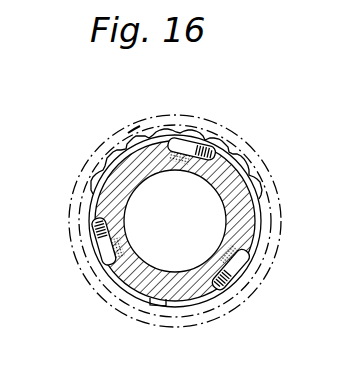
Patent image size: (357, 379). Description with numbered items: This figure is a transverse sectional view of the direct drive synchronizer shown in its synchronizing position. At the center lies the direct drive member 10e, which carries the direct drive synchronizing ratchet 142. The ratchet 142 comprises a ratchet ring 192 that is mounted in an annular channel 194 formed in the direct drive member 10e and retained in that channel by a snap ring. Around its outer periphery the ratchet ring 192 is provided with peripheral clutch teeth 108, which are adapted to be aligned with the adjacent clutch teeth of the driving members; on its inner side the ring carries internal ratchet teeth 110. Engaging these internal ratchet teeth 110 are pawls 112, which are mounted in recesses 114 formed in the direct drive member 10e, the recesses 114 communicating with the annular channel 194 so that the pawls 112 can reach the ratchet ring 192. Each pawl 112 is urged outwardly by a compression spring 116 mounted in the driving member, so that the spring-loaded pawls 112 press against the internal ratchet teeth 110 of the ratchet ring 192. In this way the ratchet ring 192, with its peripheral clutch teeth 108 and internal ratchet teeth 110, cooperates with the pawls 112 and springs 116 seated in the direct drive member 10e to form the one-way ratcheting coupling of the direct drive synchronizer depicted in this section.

The direct drive member 10e is at (112, 196).
The internal ratchet teeth 110 is at (138, 143).
The peripheral clutch teeth 108 is at (200, 125).
The ratchet ring 192 is at (132, 124).
The direct drive synchronizing ratchet 142 is at (176, 130).
The compression spring 116 is at (178, 150).
The pawl 112 is at (94, 247).
The recess 114 is at (243, 256).
The annular channel 194 is at (159, 303).